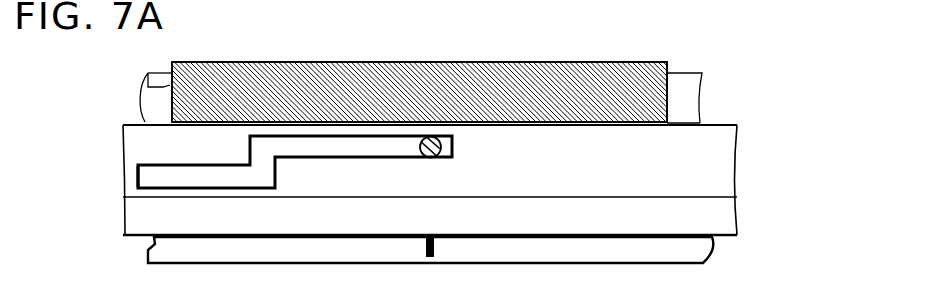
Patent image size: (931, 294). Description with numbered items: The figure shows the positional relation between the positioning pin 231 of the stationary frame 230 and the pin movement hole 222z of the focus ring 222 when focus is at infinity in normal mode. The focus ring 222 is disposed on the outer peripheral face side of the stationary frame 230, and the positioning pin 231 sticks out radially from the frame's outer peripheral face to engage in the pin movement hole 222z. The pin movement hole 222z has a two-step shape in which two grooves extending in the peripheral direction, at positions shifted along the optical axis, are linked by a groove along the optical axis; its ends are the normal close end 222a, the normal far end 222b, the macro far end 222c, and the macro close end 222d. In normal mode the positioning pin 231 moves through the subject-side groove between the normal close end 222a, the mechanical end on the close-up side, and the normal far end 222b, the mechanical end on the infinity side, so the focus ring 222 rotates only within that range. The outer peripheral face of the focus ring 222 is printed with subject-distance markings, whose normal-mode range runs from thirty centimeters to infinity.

The focus ring 222 is at (693, 172).
The normal close end 222a is at (172, 131).
The normal far end 222b is at (463, 125).
The macro far end 222c is at (275, 173).
The macro close end 222d is at (157, 180).
The pin movement hole 222z is at (193, 178).
The stationary frame 230 is at (187, 89).
The positioning pin 231 is at (442, 133).